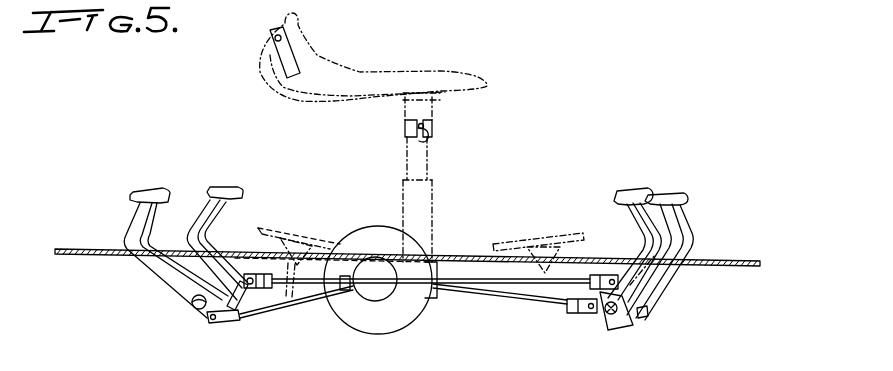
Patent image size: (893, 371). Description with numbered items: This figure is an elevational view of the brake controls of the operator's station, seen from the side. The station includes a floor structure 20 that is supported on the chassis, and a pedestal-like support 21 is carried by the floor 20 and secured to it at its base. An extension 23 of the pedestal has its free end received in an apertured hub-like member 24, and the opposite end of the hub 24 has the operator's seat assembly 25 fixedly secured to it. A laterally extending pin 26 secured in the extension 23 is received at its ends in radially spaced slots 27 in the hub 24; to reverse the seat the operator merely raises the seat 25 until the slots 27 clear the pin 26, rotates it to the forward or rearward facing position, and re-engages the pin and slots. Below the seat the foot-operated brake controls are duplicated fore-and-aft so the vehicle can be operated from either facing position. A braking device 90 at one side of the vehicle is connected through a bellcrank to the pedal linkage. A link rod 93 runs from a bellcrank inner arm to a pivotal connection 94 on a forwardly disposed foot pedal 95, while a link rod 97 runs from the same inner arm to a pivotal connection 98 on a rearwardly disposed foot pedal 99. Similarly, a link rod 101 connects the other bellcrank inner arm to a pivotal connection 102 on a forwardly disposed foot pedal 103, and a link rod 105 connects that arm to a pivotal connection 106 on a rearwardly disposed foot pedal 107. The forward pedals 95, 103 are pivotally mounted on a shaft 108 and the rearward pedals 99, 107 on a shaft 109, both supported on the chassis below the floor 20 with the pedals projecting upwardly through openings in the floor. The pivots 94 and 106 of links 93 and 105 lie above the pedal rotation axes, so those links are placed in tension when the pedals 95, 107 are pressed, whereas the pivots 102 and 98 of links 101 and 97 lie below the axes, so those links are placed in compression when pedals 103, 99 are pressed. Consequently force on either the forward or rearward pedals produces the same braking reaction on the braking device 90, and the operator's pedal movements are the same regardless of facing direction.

The floor structure 20 is at (95, 250).
The pedestal-like support 21 is at (433, 195).
The extension 23 is at (428, 167).
The hub-like member 24 is at (410, 105).
The operator's seat assembly 25 is at (397, 72).
The laterally extending pin 26 is at (425, 130).
The radially spaced slots 27 is at (429, 143).
The braking device 90 is at (372, 323).
The link rod 93 is at (523, 285).
The pivotal connection 94 is at (612, 275).
The forwardly disposed foot pedal 95 is at (706, 183).
The link rod 97 is at (298, 306).
The pivotal connection 98 is at (211, 323).
The rearwardly disposed foot pedal 99 is at (162, 186).
The link rod 101 is at (546, 300).
The pivotal connection 102 is at (586, 314).
The forwardly disposed foot pedal 103 is at (625, 192).
The link rod 105 is at (277, 292).
The pivotal connection 106 is at (244, 255).
The rearwardly disposed foot pedal 107 is at (264, 157).
The shaft 108 is at (650, 312).
The shaft 109 is at (192, 305).